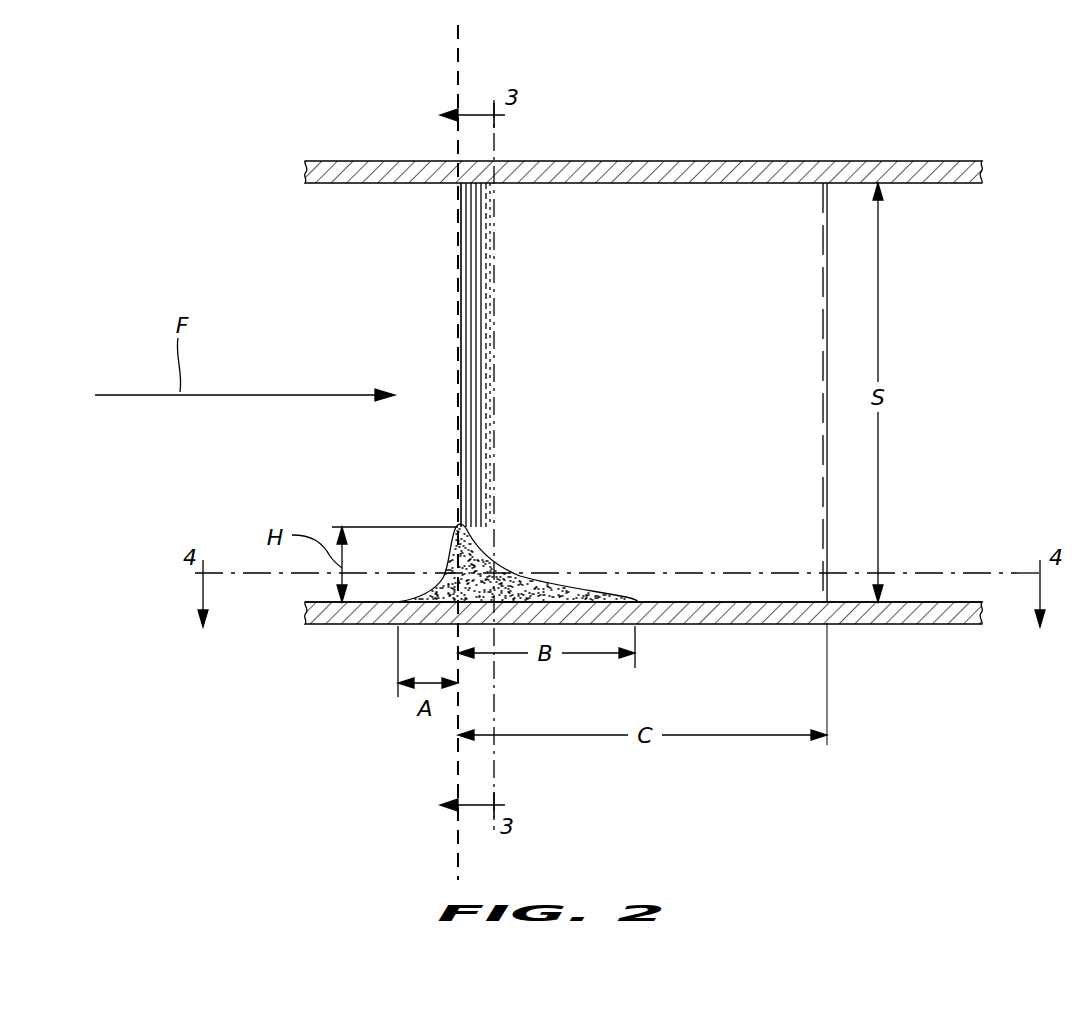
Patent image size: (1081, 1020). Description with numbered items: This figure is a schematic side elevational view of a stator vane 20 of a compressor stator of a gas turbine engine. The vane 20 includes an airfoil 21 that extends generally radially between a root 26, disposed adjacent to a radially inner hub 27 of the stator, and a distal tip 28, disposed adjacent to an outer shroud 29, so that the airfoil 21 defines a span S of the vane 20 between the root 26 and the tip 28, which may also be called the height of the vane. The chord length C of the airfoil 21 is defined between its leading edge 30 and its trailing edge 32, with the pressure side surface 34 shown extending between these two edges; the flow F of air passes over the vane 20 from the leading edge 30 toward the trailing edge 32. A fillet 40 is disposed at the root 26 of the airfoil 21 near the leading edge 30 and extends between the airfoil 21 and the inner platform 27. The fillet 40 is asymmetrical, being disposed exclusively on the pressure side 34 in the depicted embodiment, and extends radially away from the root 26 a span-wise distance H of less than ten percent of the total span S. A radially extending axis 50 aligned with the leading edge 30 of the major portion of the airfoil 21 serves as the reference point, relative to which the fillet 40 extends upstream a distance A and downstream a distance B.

The stator vane 20 is at (660, 114).
The airfoil 21 is at (726, 238).
The root 26 is at (703, 588).
The radially inner hub 27 is at (915, 612).
The distal tip 28 is at (492, 204).
The outer shroud 29 is at (943, 172).
The leading edge 30 is at (458, 325).
The trailing edge 32 is at (828, 296).
The pressure side surface 34 is at (645, 364).
The fillet 40 is at (428, 550).
The radially extending axis 50 is at (460, 848).